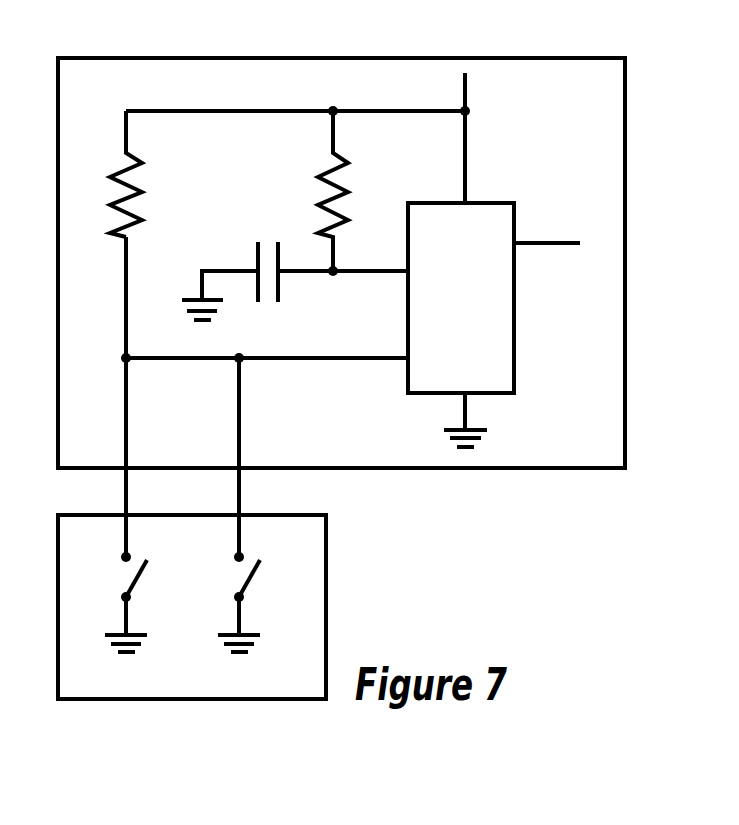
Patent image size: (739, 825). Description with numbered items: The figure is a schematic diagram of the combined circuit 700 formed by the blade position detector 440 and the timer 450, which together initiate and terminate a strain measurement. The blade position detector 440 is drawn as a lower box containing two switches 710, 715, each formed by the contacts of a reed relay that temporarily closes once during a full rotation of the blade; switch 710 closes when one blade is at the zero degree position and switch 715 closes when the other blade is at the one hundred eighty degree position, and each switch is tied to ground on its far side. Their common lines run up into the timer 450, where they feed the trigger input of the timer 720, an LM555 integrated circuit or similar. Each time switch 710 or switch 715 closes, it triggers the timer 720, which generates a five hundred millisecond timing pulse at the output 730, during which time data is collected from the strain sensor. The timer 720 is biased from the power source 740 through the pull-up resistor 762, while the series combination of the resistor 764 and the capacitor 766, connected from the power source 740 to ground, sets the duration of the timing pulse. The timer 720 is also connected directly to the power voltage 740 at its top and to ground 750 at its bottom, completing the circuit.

The switch interface circuit 700 is at (508, 44).
The timer 450 is at (355, 453).
The blade position detector 440 is at (212, 689).
The timer 720 is at (482, 313).
The power source 740 is at (467, 87).
The output 730 is at (548, 241).
The ground 750 is at (490, 442).
The pull-up resistor 762 is at (124, 194).
The resistor 764 is at (347, 202).
The capacitor 766 is at (280, 285).
The switch 710 is at (122, 577).
The switch 715 is at (262, 577).